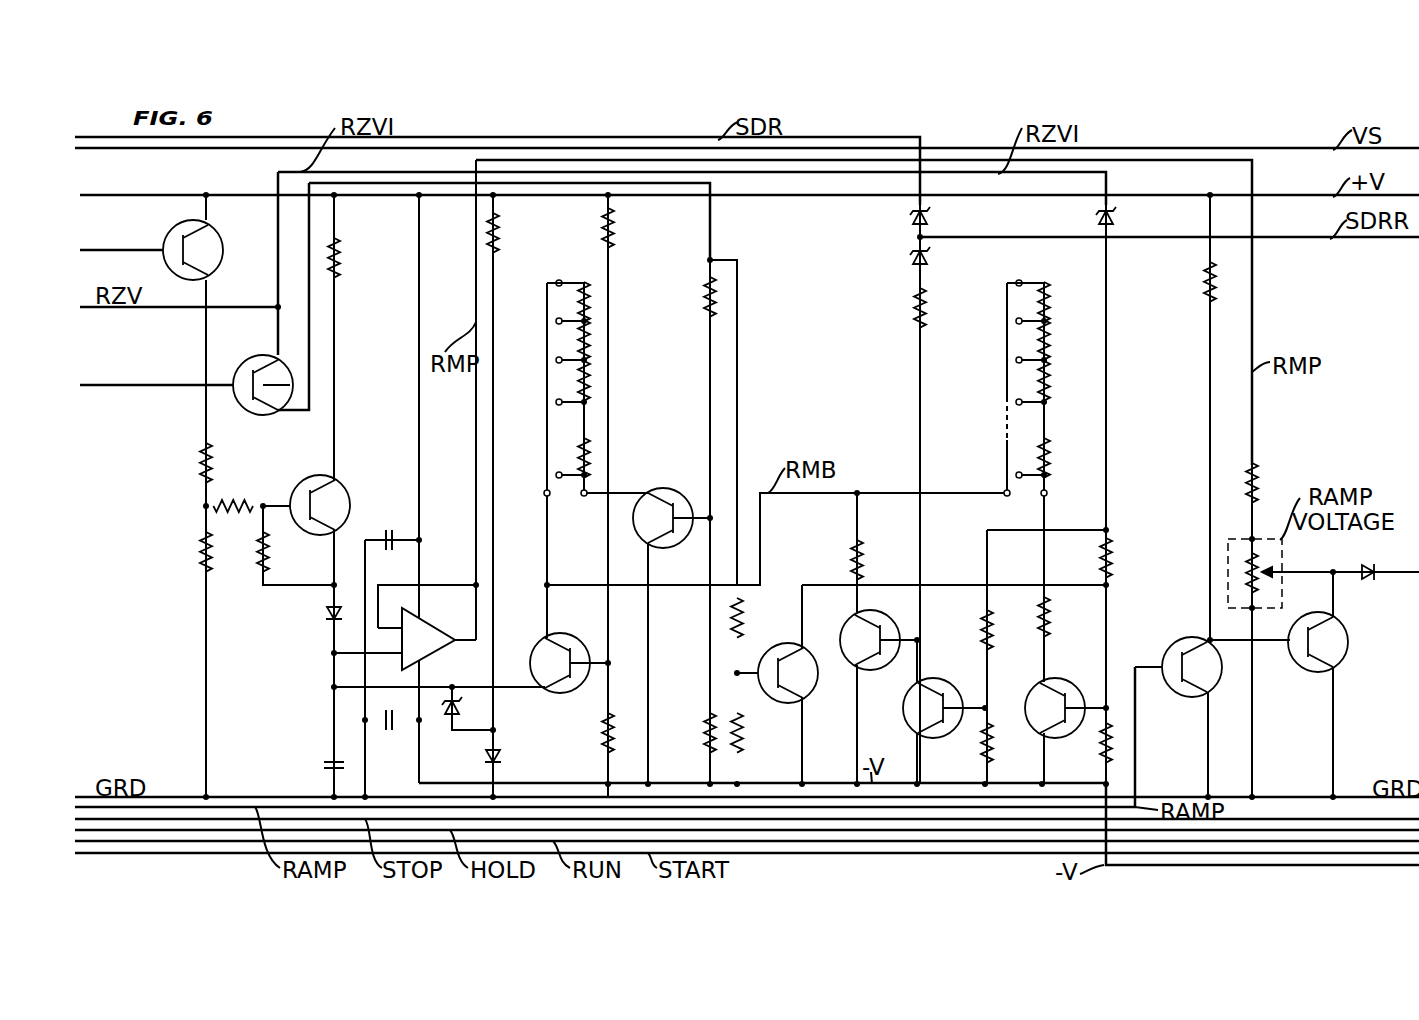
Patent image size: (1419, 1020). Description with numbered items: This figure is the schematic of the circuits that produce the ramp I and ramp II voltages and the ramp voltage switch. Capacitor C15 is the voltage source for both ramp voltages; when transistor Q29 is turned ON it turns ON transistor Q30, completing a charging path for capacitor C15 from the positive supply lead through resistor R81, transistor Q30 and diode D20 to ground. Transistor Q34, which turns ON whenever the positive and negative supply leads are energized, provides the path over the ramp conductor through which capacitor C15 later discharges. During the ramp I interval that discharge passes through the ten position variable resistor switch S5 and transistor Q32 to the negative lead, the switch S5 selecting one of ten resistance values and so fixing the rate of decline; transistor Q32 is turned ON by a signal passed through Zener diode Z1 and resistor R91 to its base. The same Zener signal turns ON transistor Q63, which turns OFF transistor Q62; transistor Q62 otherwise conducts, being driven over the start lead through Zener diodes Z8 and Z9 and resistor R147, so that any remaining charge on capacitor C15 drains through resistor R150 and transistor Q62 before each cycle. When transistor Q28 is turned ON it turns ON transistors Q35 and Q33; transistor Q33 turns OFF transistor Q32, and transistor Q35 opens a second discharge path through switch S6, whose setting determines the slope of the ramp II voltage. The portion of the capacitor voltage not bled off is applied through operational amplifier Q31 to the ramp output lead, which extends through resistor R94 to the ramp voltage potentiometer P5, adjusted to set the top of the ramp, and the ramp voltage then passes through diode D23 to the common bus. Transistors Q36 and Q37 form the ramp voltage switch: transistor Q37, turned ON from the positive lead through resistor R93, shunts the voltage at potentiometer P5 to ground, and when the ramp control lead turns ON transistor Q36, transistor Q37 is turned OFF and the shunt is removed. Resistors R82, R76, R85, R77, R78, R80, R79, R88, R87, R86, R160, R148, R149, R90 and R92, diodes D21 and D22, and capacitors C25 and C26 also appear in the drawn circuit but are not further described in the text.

The transistor Q29 is at (208, 247).
The transistor Q28 is at (262, 376).
The transistor Q30 is at (319, 497).
The operational amplifier Q31 is at (433, 637).
The transistor Q34 is at (562, 655).
The transistor Q35 is at (663, 510).
The transistor Q33 is at (788, 664).
The transistor Q62 is at (870, 632).
The transistor Q63 is at (936, 698).
The transistor Q32 is at (1056, 698).
The transistor Q36 is at (1192, 658).
The transistor Q37 is at (1338, 642).
The resistor R81 is at (355, 258).
The resistor R82 is at (514, 233).
The resistor R76 is at (628, 228).
The resistor R85 is at (692, 297).
The resistor R147 is at (946, 308).
The resistor R93 is at (1192, 282).
The resistor R77 is at (226, 462).
The resistor R78 is at (235, 496).
The resistor R80 is at (226, 552).
The resistor R79 is at (283, 552).
The resistor R150 is at (884, 560).
The resistor R91 is at (1126, 558).
The resistor R94 is at (1254, 470).
The resistor R88 is at (756, 618).
The resistor R87 is at (756, 733).
The resistor R86 is at (692, 733).
The resistor R160 is at (586, 733).
The resistor R148 is at (964, 630).
The resistor R149 is at (983, 745).
The resistor R90 is at (1062, 617).
The resistor R92 is at (1083, 744).
The Zener diode Z8 is at (935, 218).
The Zener diode Z9 is at (935, 258).
The Zener diode Z1 is at (1121, 218).
The diode D20 is at (314, 618).
The zener diode D21 is at (448, 718).
The diode D22 is at (514, 762).
The diode D23 is at (1376, 562).
The capacitor C25 is at (388, 529).
The capacitor C26 is at (390, 734).
The capacitor C15 is at (315, 769).
The ten position switch S6 is at (580, 268).
The ten position variable resistor switch S5 is at (1037, 268).
The ramp voltage potentiometer P5 is at (1282, 562).